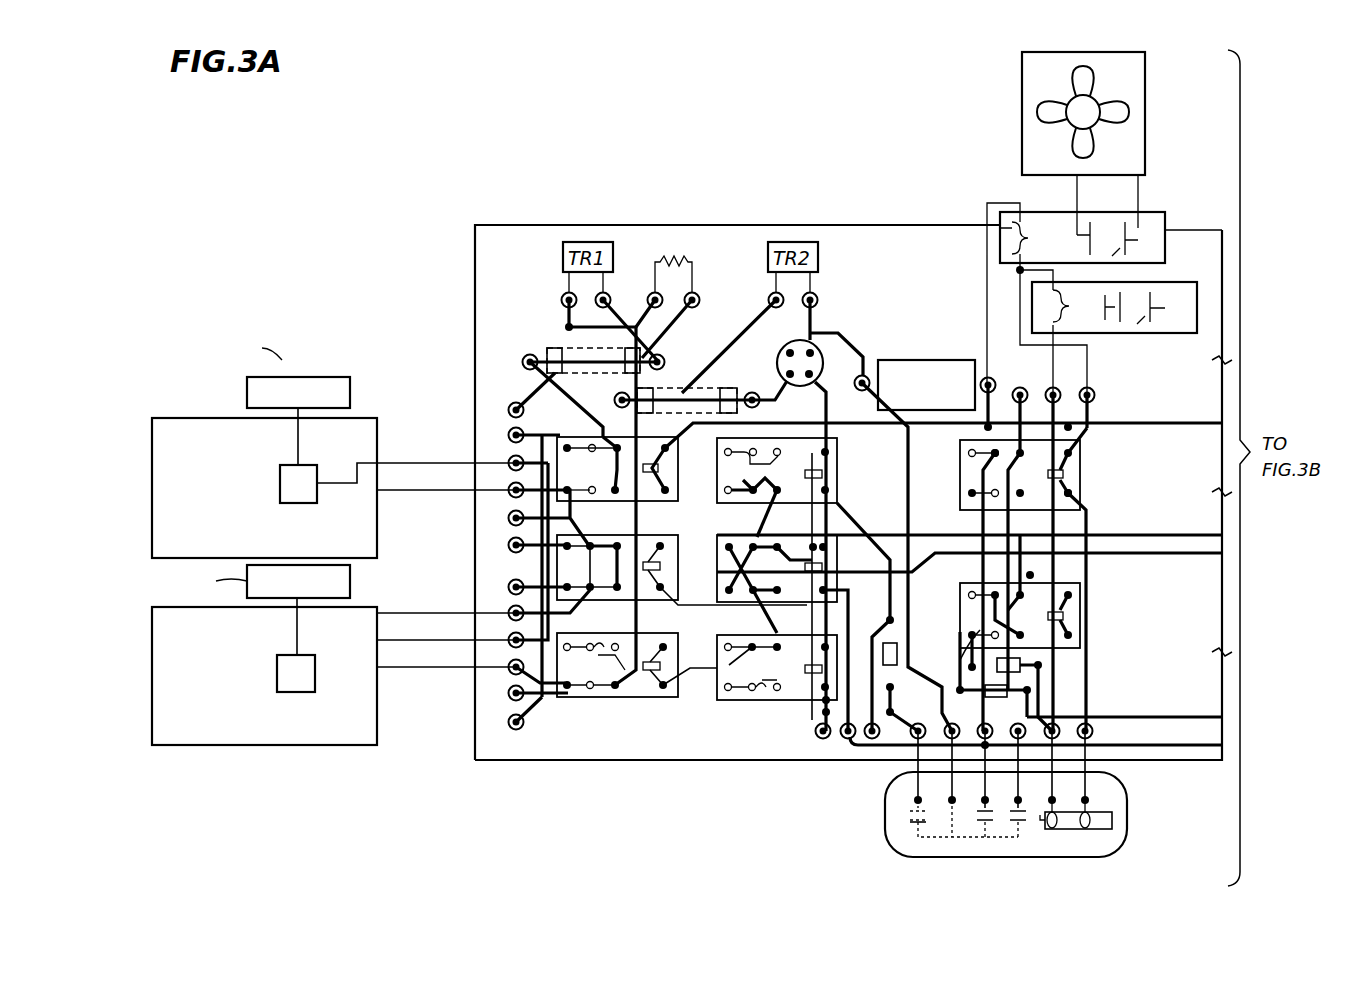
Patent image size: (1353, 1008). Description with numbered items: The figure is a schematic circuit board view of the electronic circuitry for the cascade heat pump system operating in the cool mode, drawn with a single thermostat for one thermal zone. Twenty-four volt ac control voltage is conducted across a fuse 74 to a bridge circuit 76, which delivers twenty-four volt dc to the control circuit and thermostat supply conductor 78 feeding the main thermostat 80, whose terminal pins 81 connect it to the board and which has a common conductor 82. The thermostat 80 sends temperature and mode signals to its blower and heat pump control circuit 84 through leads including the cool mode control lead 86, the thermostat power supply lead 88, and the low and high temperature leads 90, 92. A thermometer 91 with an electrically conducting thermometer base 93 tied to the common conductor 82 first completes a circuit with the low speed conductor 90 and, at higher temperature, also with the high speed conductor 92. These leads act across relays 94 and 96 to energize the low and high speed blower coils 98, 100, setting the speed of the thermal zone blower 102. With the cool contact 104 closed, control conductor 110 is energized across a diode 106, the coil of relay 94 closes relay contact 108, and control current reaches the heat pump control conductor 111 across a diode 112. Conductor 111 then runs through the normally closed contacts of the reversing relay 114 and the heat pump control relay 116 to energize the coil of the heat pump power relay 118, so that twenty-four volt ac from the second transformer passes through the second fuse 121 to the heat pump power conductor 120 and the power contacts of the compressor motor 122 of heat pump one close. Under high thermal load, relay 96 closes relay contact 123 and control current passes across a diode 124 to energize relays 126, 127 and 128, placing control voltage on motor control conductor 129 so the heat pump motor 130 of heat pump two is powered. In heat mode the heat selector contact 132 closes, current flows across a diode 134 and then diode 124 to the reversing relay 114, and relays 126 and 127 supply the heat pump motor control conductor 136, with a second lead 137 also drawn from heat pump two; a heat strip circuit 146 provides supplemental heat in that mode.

The fuse 74 is at (723, 394).
The bridge circuit 76 is at (827, 350).
The control circuit and thermostat supply conductor 78 is at (870, 606).
The main thermostat 80 is at (885, 820).
The connector pins 81 is at (898, 810).
The common conductor 82 is at (962, 840).
The blower and heat pump control circuit 84 is at (1110, 412).
The cool mode control lead 86 is at (992, 822).
The thermostat power supply lead 88 is at (948, 828).
The low temperature lead 90 is at (1055, 785).
The thermometer 91 is at (1109, 830).
The high temperature lead 92 is at (1090, 796).
The thermometer base 93 is at (1096, 834).
The relay 94 is at (1080, 620).
The relay 96 is at (1080, 482).
The low speed blower coil 98 is at (1033, 305).
The high speed blower coil 100 is at (1000, 225).
The thermal zone blower 102 is at (1146, 108).
The cool contact 104 is at (1038, 824).
The diode 106 is at (1016, 688).
The relay contact 108 is at (971, 663).
The control conductor 110 is at (947, 638).
The heat pump control conductor 111 is at (945, 630).
The diode 112 is at (1030, 575).
The reversing relay 114 is at (775, 532).
The heat pump control relay 116 is at (837, 466).
The heat pump power relay 118 is at (575, 430).
The heat pump power conductor 120 is at (525, 364).
The second fuse 121 is at (564, 350).
The compressor motor 122 is at (280, 496).
The relay contact 123 is at (1010, 490).
The diode 124 is at (1075, 512).
The relay 126 is at (787, 705).
The relay 127 is at (612, 698).
The relay 128 is at (628, 536).
The motor control conductor 129 is at (440, 612).
The heat pump motor 130 is at (277, 670).
The heat selector contact 132 is at (1046, 824).
The diode 134 is at (1020, 666).
The heat pump motor control conductor 136 is at (449, 668).
The line 137 is at (426, 642).
The heat strip circuit 146 is at (680, 258).